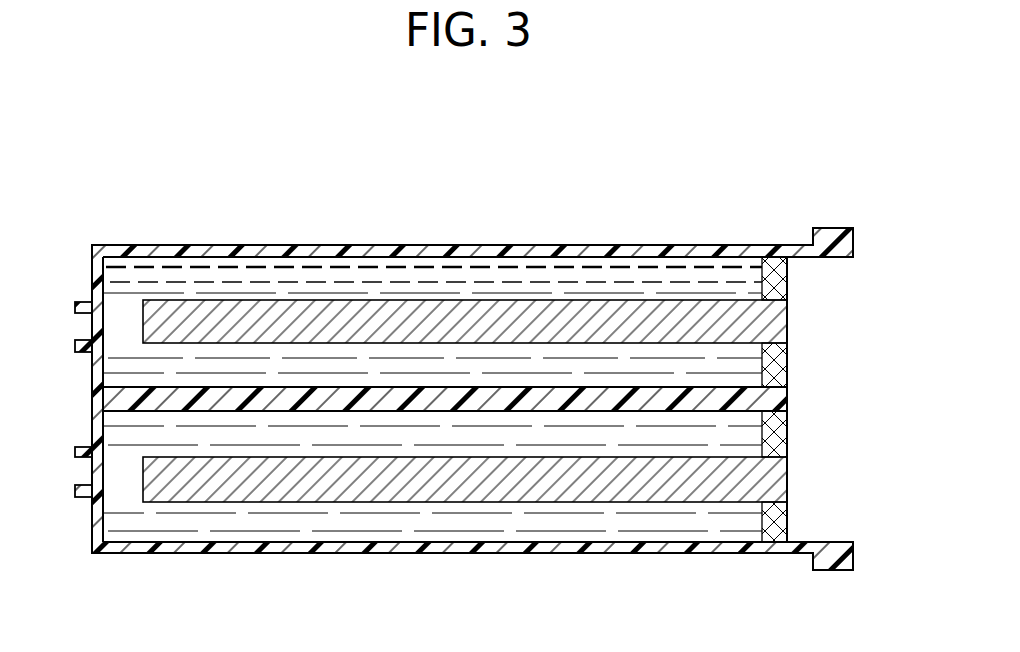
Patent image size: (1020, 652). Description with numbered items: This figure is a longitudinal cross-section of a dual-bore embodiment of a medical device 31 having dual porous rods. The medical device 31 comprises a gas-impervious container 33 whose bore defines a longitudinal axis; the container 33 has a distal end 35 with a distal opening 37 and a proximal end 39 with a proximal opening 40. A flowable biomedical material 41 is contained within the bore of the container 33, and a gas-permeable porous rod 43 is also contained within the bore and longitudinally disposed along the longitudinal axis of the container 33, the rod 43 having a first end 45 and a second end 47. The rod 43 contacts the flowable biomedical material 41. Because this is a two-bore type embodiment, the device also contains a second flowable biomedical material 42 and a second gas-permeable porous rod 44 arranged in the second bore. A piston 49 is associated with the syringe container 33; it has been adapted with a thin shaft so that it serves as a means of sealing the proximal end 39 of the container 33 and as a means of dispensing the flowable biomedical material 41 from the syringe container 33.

The medical device 31 is at (540, 163).
The gas-impervious container 33 is at (545, 247).
The distal end 35 is at (152, 245).
The distal opening 37 is at (83, 327).
The proximal end 39 is at (845, 228).
The proximal opening 40 is at (812, 298).
The flowable biomedical material 41 is at (457, 288).
The second flowable biomedical material 42 is at (381, 522).
The gas-permeable porous rod 43 is at (359, 302).
The second gas-permeable porous rod 44 is at (250, 480).
The first end 45 is at (776, 318).
The second end 47 is at (103, 366).
The piston 49 is at (787, 363).